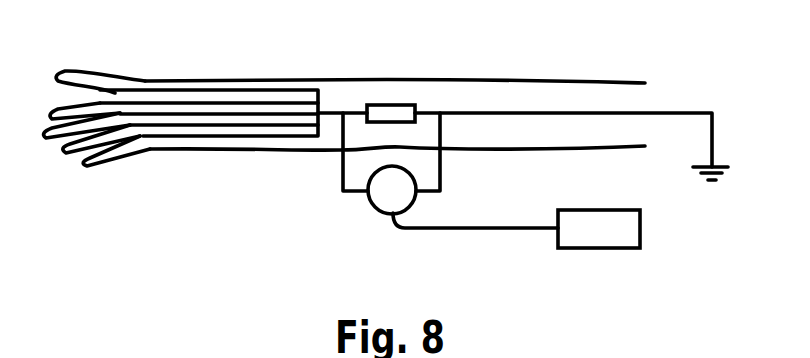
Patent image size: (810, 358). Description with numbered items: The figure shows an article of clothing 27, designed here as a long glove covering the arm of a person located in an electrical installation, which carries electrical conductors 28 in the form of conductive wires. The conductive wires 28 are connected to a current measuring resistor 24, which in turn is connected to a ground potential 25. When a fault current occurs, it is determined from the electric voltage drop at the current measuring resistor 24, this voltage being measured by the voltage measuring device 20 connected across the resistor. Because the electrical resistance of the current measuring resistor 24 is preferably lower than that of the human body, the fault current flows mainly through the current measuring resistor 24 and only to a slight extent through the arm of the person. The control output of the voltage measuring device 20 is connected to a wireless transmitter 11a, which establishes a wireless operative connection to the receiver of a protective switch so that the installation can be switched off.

The wireless transmitter 11a is at (628, 230).
The voltage measuring device 20 is at (372, 208).
The current measuring resistor 24 is at (382, 112).
The ground potential 25 is at (715, 145).
The article of clothing 27 is at (602, 80).
The electrical conductors 28 is at (202, 90).